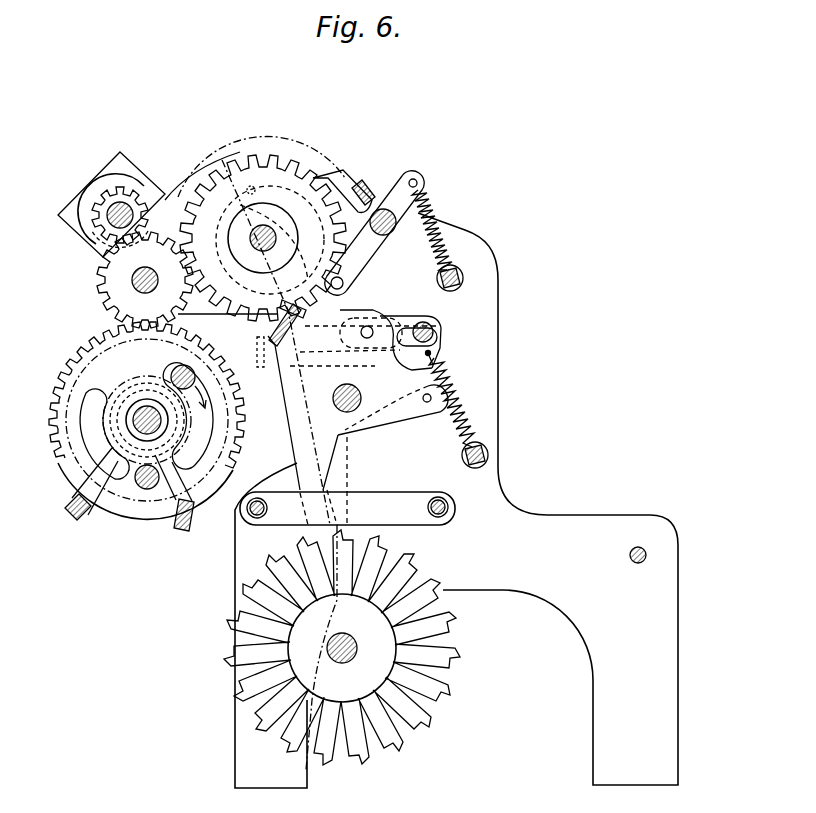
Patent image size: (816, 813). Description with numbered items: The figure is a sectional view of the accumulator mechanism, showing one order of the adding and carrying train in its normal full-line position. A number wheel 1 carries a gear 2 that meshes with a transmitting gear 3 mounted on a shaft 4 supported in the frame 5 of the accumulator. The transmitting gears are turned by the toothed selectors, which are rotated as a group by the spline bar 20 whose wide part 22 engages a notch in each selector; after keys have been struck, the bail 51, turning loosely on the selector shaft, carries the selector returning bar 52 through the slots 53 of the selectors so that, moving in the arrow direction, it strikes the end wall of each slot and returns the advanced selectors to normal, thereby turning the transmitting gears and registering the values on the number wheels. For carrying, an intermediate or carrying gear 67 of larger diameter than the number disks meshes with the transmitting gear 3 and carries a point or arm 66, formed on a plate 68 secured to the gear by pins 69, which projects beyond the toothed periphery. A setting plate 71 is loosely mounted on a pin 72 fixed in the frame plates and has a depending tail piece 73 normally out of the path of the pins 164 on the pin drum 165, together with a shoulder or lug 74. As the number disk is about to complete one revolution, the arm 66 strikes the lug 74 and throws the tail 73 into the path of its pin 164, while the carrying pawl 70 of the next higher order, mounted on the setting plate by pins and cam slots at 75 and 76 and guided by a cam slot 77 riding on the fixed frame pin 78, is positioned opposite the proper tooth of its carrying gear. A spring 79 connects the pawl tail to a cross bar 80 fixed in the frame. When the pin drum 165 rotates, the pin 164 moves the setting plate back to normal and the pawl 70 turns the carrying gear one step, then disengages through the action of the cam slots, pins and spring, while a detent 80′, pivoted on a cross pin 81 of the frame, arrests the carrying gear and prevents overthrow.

The number wheels 1 is at (110, 182).
The gear 2 is at (98, 226).
The transmitting gears 3 is at (120, 287).
The shaft 4 is at (137, 288).
The frame 5 is at (482, 350).
The spline bar 20 is at (188, 531).
The wide part of spline bar 22 is at (165, 514).
The bail 51 is at (68, 500).
The selector returning bar 52 is at (172, 371).
The slots 53 is at (204, 411).
The points or arms 66 is at (177, 196).
The intermediate gear 67 is at (251, 184).
The plates 68 is at (284, 168).
The pins 69 is at (246, 188).
The pawls 70 is at (284, 305).
The setting plates 71 is at (393, 323).
The pin 72 is at (353, 391).
The tail pieces 73 is at (318, 487).
The shoulders or lugs 74 is at (268, 325).
The pins and cam slots 75 is at (412, 401).
The pins and cam slots 76 is at (349, 321).
The cam slot 77 is at (456, 343).
The fixed pin 78 is at (427, 326).
The spring 79 is at (470, 403).
The cross bar 80 is at (489, 455).
The detent 80′ is at (372, 236).
The cross pin 81 is at (383, 209).
The pins 164 is at (462, 648).
The pin drum 165 is at (342, 647).